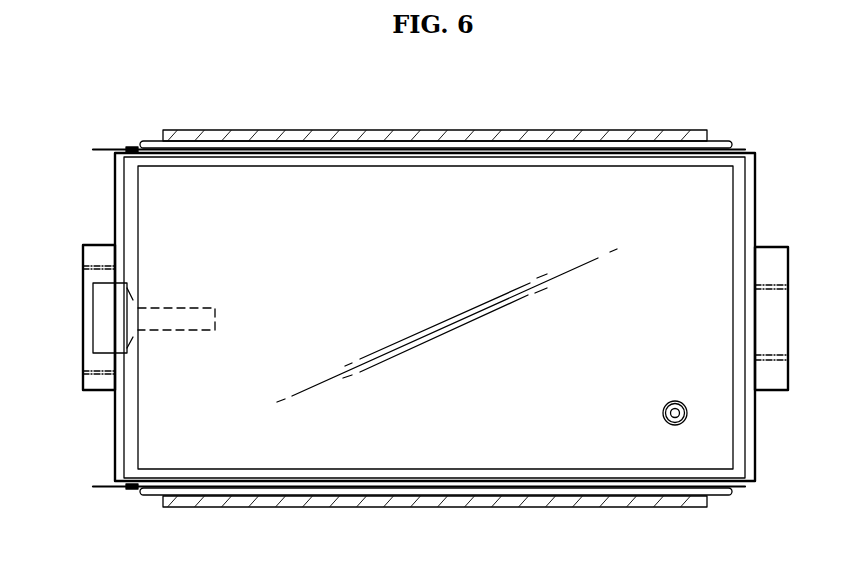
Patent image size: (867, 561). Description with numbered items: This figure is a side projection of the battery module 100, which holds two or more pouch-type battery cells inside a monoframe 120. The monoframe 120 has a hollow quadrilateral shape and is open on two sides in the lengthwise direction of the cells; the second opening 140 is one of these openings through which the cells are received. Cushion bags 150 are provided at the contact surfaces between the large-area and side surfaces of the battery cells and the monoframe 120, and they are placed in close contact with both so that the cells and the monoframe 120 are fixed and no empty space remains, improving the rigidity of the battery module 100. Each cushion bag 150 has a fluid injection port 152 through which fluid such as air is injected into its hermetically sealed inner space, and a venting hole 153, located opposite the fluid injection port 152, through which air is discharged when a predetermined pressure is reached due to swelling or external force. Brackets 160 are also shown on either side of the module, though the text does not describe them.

The battery module 100 is at (112, 186).
The monoframe 120 is at (591, 131).
The second opening 140 is at (770, 169).
The cushion bag 150 is at (152, 141).
The fluid injection port 152 is at (103, 148).
The venting hole 153 is at (680, 413).
The bracket 160 is at (92, 270).